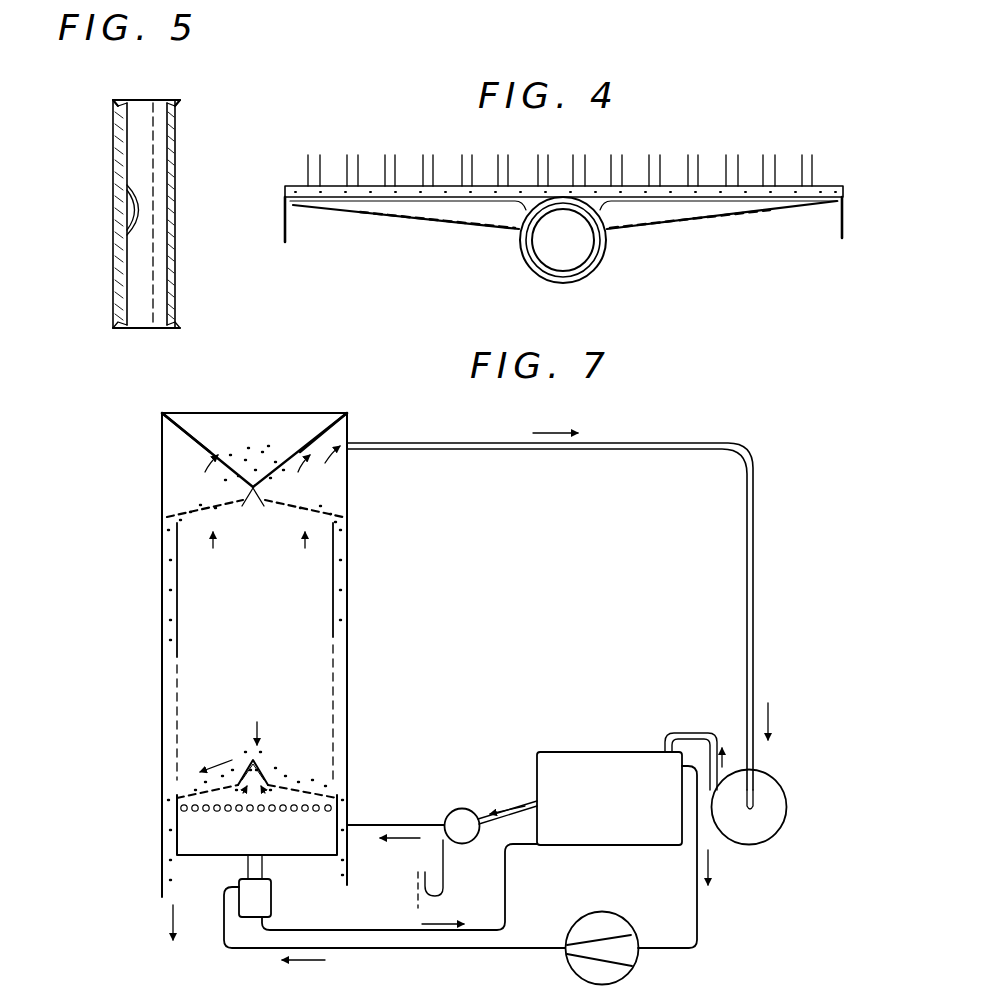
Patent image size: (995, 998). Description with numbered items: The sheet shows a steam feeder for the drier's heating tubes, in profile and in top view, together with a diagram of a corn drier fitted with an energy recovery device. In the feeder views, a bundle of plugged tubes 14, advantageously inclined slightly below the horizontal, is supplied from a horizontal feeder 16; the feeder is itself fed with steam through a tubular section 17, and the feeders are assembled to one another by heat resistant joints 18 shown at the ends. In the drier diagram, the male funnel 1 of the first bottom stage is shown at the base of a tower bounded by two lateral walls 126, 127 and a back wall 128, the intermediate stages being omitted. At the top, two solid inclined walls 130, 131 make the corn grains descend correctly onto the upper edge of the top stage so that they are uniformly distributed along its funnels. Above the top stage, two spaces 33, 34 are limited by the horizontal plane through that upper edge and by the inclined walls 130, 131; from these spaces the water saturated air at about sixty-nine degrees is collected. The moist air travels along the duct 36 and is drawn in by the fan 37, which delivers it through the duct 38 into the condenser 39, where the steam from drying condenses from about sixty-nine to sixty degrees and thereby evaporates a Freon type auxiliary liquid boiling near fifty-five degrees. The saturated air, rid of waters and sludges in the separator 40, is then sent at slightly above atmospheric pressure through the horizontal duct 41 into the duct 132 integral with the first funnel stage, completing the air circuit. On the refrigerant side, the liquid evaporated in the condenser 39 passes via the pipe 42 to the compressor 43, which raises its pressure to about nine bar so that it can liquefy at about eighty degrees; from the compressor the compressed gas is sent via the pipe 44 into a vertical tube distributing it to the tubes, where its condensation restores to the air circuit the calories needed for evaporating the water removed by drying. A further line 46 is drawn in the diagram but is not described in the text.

In FIG. 7, the male funnel 1 is at (293, 778).
In FIG. 4, the bundle of plugged tubes 14 is at (813, 160).
In FIG. 5, the horizontal feeder 16 is at (127, 232).
In FIG. 4, the horizontal feeder 16 is at (662, 188).
In FIG. 5, the tubular section 17 is at (176, 200).
In FIG. 4, the tubular section 17 is at (600, 256).
In FIG. 5, the heat resistant joints 18 is at (117, 100).
In FIG. 4, the heat resistant joints 18 is at (290, 197).
In FIG. 7, the space 33 is at (180, 456).
In FIG. 7, the space 34 is at (330, 458).
In FIG. 7, the duct 36 is at (588, 451).
In FIG. 7, the fan 37 is at (755, 843).
In FIG. 7, the duct 38 is at (692, 731).
In FIG. 7, the condenser 39 is at (609, 798).
In FIG. 7, the separator 40 is at (460, 808).
In FIG. 7, the horizontal duct 41 is at (408, 820).
In FIG. 7, the pipe 42 is at (698, 905).
In FIG. 7, the compressor 43 is at (587, 914).
In FIG. 7, the pipe 44 is at (430, 950).
In FIG. 7, the drain pipe 46 is at (391, 928).
In FIG. 7, the lateral wall 126 is at (348, 622).
In FIG. 7, the lateral wall 127 is at (163, 622).
In FIG. 7, the back wall 128 is at (255, 590).
In FIG. 7, the inclined solid wall 130 is at (190, 432).
In FIG. 7, the inclined solid wall 131 is at (320, 432).
In FIG. 7, the duct 132 is at (257, 851).